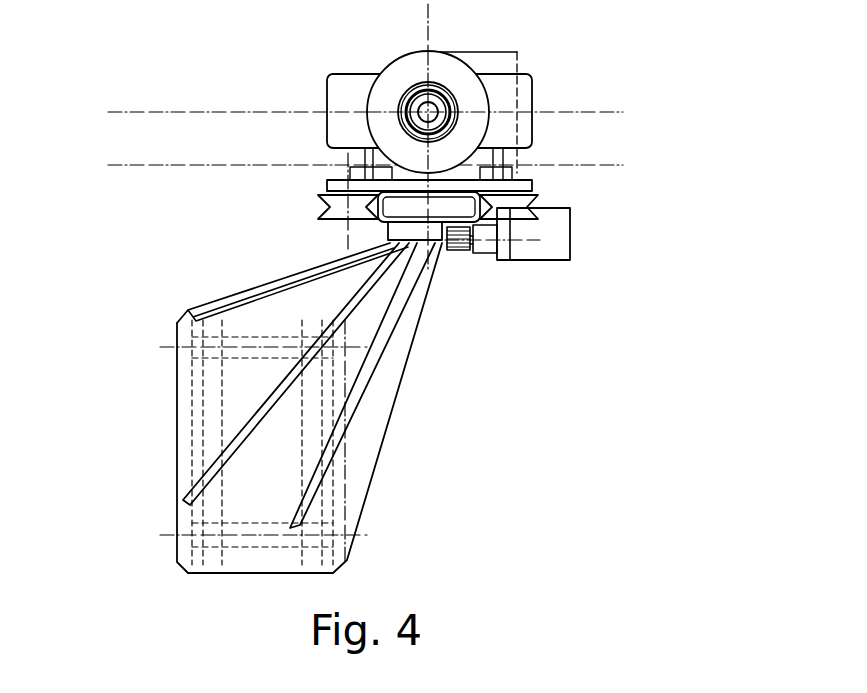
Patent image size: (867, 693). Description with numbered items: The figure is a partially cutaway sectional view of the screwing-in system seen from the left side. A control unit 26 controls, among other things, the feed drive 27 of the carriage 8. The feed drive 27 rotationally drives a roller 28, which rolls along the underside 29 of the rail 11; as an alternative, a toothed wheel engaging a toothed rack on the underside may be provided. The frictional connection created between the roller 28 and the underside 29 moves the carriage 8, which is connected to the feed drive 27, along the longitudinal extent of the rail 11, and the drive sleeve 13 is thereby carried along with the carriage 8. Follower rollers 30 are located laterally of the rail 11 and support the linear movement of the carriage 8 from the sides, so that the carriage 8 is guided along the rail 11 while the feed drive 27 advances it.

The carriage 8 is at (328, 182).
The rail 11 is at (488, 193).
The drive sleeve 13 is at (450, 90).
The control unit 26 is at (213, 417).
The feed drive 27 is at (532, 277).
The roller 28 is at (455, 250).
The underside 29 is at (445, 247).
The follower rollers 30 is at (328, 210).